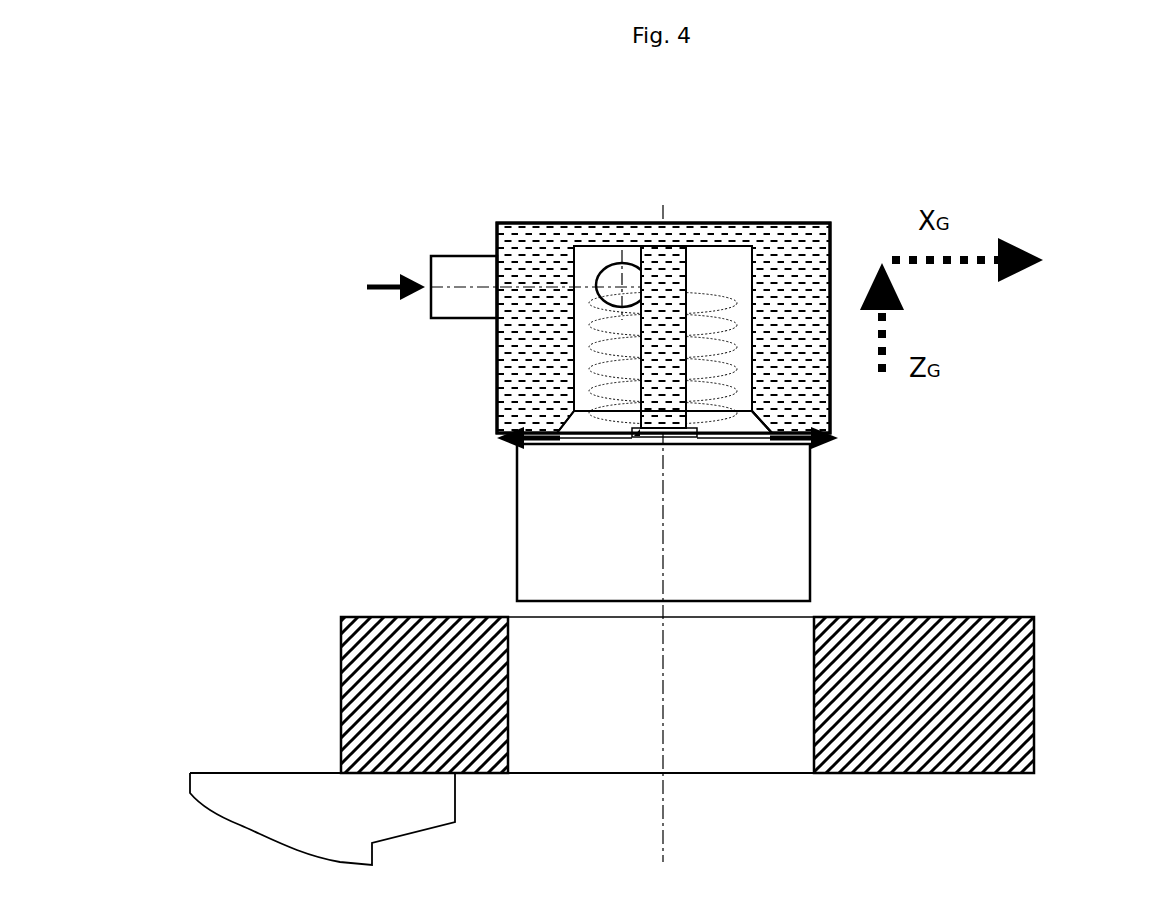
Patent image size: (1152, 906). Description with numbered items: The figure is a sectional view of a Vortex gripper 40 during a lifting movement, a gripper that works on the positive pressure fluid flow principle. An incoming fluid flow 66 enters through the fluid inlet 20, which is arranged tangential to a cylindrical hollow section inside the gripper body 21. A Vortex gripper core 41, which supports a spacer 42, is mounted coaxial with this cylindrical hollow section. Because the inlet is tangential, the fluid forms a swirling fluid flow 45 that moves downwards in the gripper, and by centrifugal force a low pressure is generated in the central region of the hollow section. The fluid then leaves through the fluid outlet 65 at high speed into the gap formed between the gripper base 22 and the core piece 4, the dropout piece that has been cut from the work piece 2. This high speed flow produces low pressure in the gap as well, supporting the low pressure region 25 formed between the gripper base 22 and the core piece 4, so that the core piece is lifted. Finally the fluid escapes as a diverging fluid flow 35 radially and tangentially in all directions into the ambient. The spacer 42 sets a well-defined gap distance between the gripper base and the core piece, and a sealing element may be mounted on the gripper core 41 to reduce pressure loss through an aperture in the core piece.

The work piece 2 is at (318, 663).
The core piece 4 is at (558, 517).
The fluid inlet 20 is at (462, 310).
The gripper body 21 is at (520, 372).
The gripper base 22 is at (768, 437).
The low pressure region 25 is at (670, 440).
The diverging fluid flow 35 is at (840, 441).
The Vortex gripper 40 is at (765, 188).
The Vortex gripper core 41 is at (653, 387).
The spacer 42 is at (634, 436).
The swirling fluid flow 45 is at (597, 350).
The fluid outlet 65 is at (728, 433).
The incoming fluid flow 66 is at (385, 270).